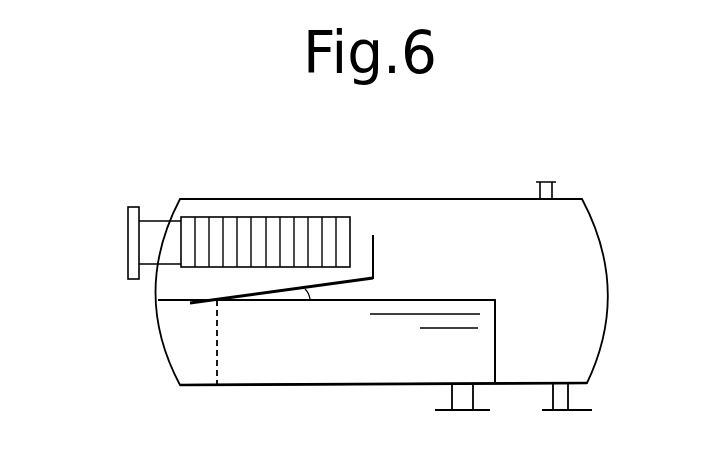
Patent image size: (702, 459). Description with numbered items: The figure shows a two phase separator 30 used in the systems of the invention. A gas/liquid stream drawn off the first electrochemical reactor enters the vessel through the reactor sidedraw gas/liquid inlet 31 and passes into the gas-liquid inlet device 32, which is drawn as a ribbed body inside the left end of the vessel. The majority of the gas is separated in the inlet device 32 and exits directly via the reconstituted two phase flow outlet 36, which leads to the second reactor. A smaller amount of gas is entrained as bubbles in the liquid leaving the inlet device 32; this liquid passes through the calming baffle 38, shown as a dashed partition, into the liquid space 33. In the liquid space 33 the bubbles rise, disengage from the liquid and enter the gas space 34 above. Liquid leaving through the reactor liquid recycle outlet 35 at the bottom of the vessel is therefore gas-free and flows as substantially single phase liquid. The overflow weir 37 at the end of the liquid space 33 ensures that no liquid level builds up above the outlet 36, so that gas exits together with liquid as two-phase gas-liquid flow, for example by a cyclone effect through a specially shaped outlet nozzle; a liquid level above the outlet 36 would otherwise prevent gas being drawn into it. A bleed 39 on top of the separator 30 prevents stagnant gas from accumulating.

The two phase separator 30 is at (657, 298).
The EC-1 Reactor sidedraw gas/liquid inlet 31 is at (127, 233).
The gas-liquid inlet device 32 is at (217, 222).
The liquid space 33 is at (280, 355).
The gas space 34 is at (417, 263).
The EC-1 Reactor liquid recycle outlet 35 is at (462, 414).
The reconstituted two phase flow outlet 36 is at (567, 414).
The overflow weir 37 is at (497, 313).
The calming baffle 38 is at (217, 327).
The bleed 39 is at (543, 173).